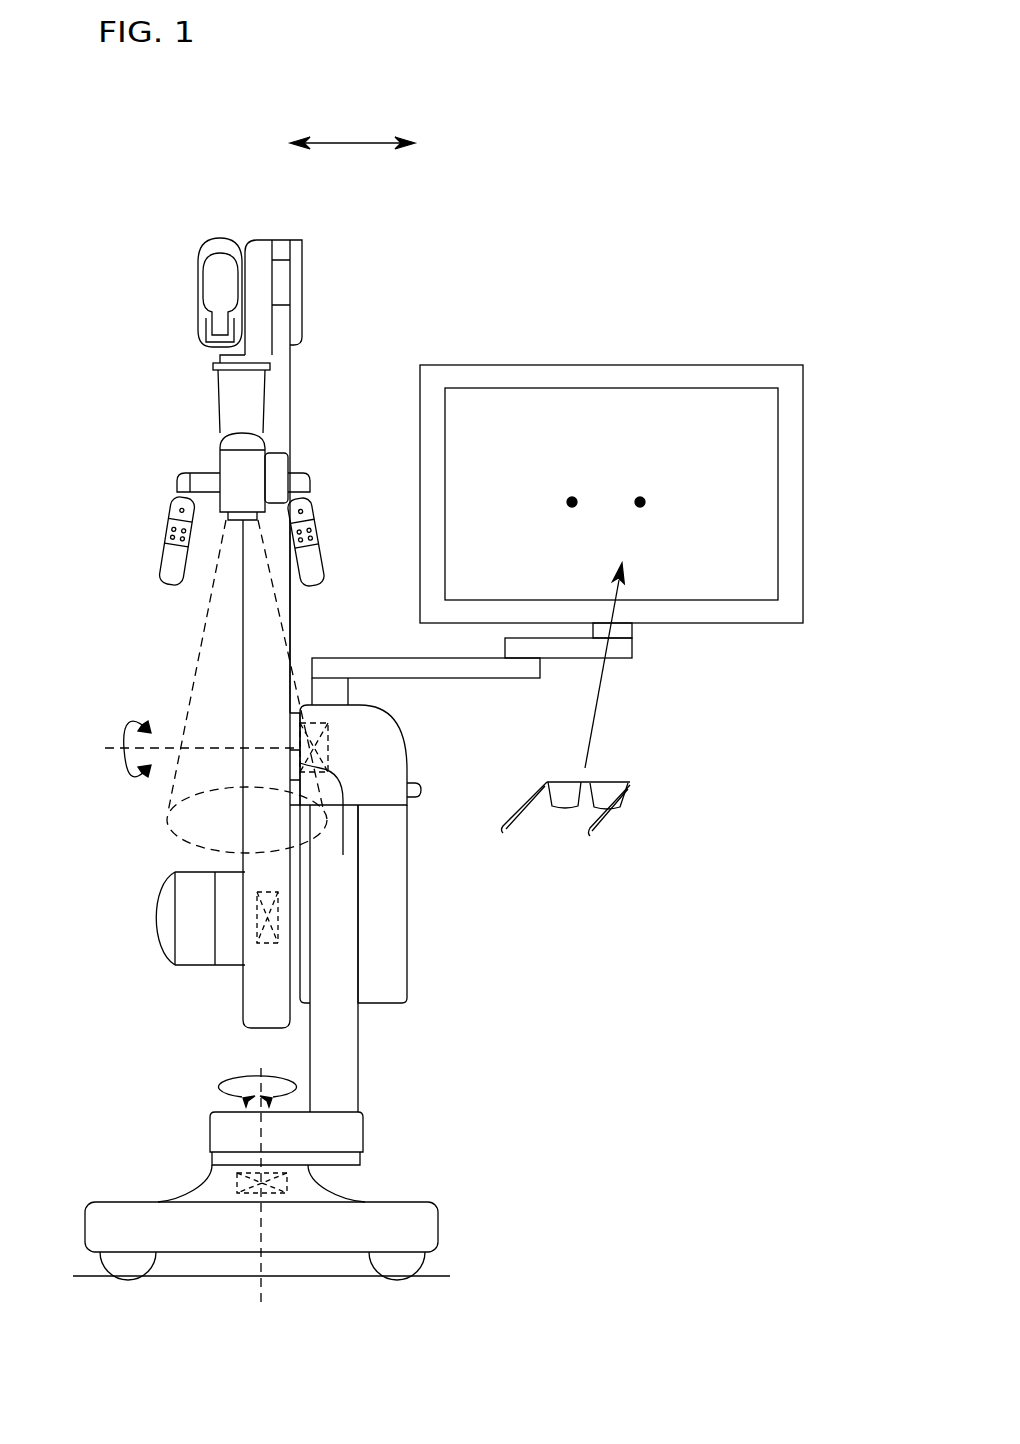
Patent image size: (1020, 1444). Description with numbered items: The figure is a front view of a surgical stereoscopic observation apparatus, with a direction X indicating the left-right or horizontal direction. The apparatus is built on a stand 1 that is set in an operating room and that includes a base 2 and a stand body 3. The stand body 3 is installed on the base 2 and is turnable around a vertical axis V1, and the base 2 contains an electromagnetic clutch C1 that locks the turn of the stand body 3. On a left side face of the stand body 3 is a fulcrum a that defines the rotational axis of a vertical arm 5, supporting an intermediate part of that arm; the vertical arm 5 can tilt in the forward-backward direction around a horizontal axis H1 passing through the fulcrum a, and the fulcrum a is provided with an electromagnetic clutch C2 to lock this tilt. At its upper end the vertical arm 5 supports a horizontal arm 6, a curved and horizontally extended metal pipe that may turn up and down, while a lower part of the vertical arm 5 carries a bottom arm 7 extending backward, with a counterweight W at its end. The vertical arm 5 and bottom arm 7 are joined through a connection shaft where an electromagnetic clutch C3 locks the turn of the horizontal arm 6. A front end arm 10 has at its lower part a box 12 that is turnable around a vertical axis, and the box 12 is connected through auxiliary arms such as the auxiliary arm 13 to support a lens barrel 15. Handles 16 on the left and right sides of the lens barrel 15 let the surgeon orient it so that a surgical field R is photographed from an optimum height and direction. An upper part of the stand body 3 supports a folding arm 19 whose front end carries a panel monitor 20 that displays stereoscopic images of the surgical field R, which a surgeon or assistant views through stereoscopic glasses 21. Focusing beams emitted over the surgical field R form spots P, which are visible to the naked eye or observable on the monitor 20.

The stand 1 is at (375, 299).
The base 2 is at (128, 1202).
The stand body 3 is at (408, 932).
The vertical arm 5 is at (243, 588).
The horizontal arm 6 is at (218, 238).
The bottom arm 7 is at (187, 893).
The front end arm 10 is at (263, 282).
The box 12 is at (218, 380).
The auxiliary arm 13 is at (252, 408).
The lens barrel 15 is at (233, 460).
The handles 16 is at (166, 577).
The folding arm 19 is at (487, 679).
The panel monitor 20 is at (685, 365).
The 3D glasses 21 is at (632, 787).
The direction X is at (350, 143).
The spots P is at (640, 497).
The surgical field R is at (247, 686).
The counterweight W is at (160, 908).
The fulcrum a is at (343, 855).
The horizontal axis H1 is at (183, 749).
The vertical axis V1 is at (258, 1210).
The electromagnetic clutch C1 is at (287, 1183).
The electromagnetic clutch C2 is at (327, 738).
The electromagnetic clutch C3 is at (262, 927).